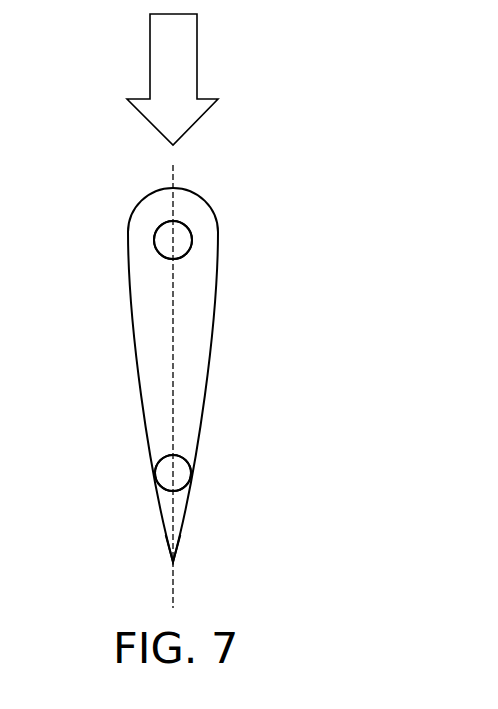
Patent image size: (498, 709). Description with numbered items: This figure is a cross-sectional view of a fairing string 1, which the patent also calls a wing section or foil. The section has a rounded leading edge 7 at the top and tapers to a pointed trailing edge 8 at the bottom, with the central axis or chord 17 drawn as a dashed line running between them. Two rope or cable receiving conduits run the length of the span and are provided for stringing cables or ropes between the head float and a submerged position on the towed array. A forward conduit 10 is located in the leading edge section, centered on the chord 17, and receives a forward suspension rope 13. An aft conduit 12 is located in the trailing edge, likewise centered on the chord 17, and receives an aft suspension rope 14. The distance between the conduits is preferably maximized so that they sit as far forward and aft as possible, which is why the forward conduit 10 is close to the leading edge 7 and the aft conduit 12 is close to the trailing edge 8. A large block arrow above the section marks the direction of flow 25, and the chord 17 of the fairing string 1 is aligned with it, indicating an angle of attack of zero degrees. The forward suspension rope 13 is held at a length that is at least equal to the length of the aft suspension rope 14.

The fairing string 1 is at (176, 370).
The leading edge 7 is at (185, 180).
The trailing edge 8 is at (186, 574).
The forward conduit 10 is at (159, 227).
The aft conduit 12 is at (158, 466).
The forward suspension rope 13 is at (178, 240).
The aft suspension rope 14 is at (178, 478).
The chord 17 is at (172, 323).
The direction of flow 25 is at (172, 79).